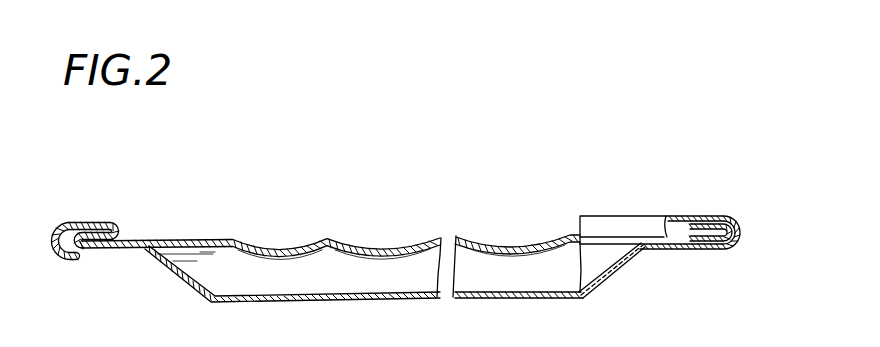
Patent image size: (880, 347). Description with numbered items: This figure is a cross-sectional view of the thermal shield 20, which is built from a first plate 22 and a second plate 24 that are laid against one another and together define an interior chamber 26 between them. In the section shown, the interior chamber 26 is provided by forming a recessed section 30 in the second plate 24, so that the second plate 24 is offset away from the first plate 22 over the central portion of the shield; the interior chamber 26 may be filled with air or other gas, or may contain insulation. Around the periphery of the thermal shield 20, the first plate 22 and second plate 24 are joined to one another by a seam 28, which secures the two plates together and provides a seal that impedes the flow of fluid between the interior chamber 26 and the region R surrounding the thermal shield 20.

The thermal shield 20 is at (326, 200).
The first plate 22 is at (630, 284).
The second plate 24 is at (464, 232).
The interior chamber 26 is at (495, 275).
The seam 28 is at (729, 200).
The recessed section 30 is at (170, 271).
The region R is at (744, 237).